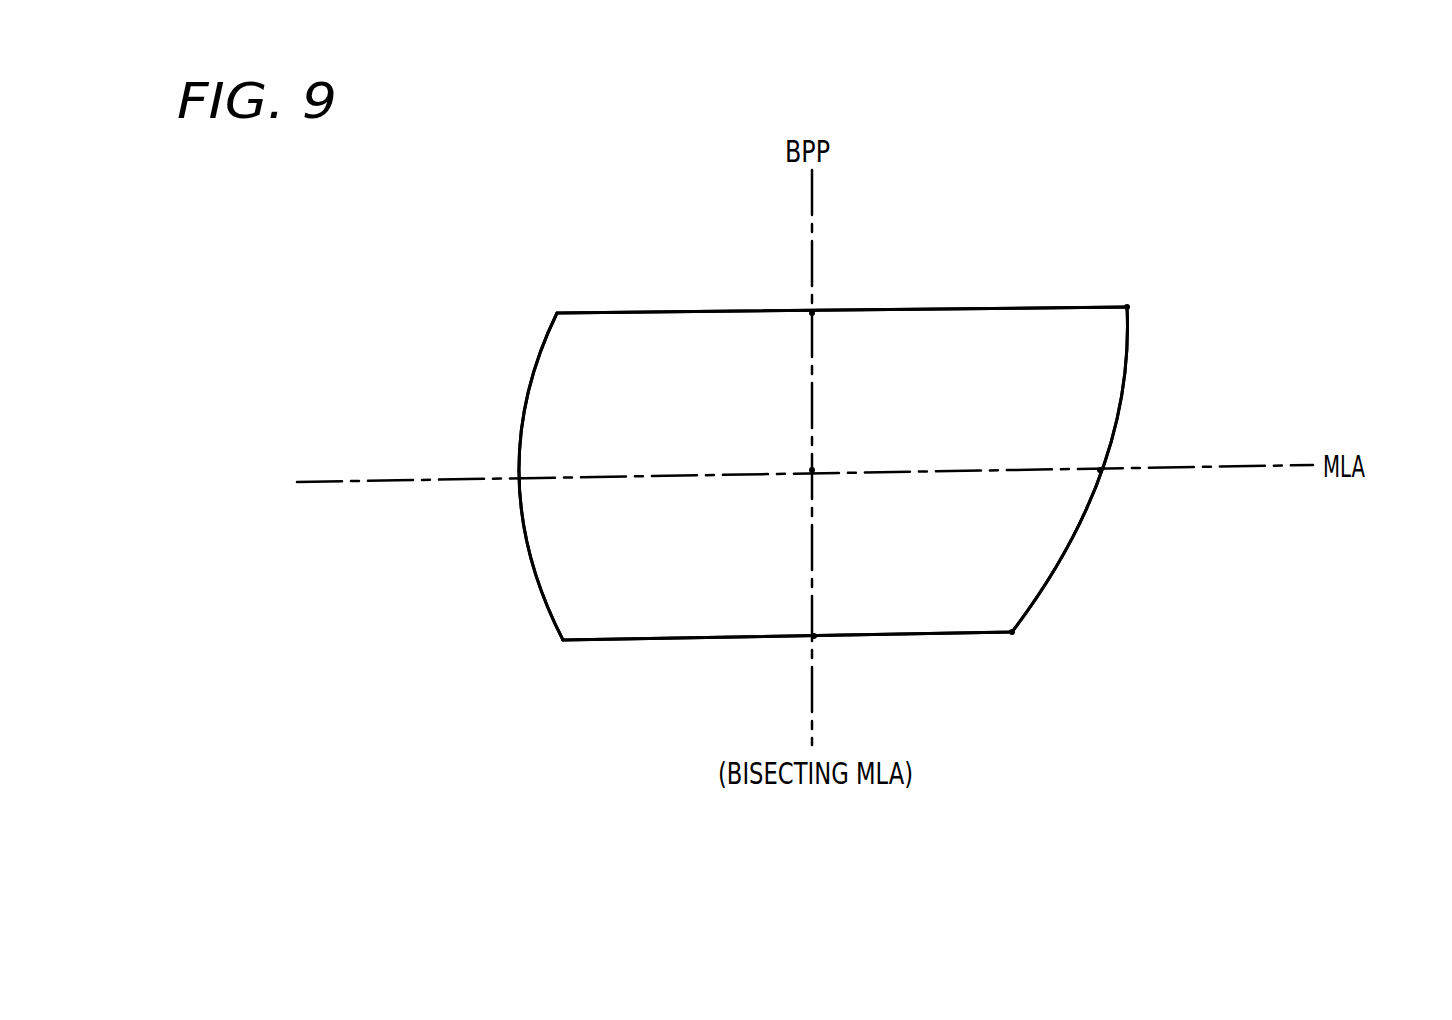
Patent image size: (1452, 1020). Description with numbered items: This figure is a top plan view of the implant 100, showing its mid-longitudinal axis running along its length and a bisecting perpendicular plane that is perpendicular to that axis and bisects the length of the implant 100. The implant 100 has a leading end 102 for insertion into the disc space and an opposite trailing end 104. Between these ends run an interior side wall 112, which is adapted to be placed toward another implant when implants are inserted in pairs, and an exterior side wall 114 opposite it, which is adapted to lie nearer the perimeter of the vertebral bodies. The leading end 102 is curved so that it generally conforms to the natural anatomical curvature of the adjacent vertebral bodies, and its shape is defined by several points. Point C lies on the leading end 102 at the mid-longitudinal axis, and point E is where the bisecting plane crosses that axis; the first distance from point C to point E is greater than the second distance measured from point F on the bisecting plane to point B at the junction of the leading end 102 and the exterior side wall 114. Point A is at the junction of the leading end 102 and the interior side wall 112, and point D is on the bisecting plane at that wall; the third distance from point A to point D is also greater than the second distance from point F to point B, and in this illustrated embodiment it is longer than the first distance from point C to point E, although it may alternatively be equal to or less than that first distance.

The implant 100 is at (605, 247).
The leading end 102 is at (1122, 390).
The trailing end 104 is at (533, 377).
The interior side wall 112 is at (973, 307).
The exterior side wall 114 is at (620, 640).
The point A is at (1127, 307).
The point B is at (1012, 632).
The point C is at (1100, 470).
The point D is at (812, 313).
The point E is at (812, 470).
The point F is at (814, 636).